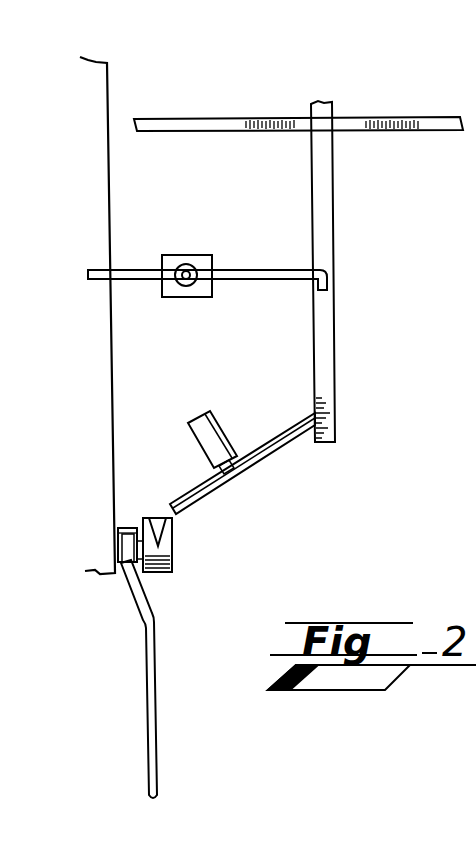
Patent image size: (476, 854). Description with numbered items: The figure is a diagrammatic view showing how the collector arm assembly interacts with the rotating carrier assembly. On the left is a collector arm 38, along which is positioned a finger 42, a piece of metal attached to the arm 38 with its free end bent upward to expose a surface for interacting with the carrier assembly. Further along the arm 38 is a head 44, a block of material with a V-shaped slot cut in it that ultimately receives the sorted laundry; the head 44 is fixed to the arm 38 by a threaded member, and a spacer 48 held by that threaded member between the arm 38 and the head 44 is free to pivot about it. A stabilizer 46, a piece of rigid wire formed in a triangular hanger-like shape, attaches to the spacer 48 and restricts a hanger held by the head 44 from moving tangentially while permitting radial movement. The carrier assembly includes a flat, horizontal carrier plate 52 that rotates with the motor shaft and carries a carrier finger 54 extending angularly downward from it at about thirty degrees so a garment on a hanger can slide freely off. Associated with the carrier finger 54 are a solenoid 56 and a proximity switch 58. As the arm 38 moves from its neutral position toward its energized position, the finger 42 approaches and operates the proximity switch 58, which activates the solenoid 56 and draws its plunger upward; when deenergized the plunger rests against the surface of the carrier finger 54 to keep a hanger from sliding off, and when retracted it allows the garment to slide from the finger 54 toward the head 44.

The arm 38 is at (109, 190).
The finger 42 is at (133, 279).
The head 44 is at (172, 563).
The stabilizer 46 is at (147, 603).
The spacer 48 is at (132, 530).
The carrier plate 52 is at (383, 133).
The carrier finger 54 is at (252, 473).
The solenoid 56 is at (217, 423).
The proximity switch 58 is at (188, 297).